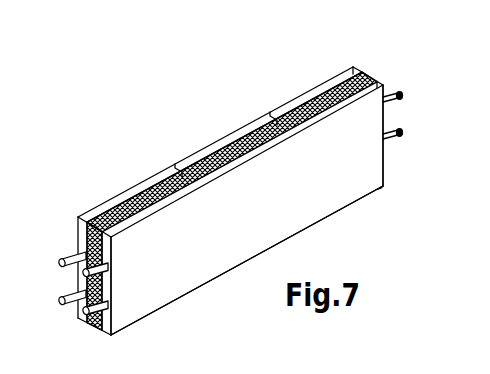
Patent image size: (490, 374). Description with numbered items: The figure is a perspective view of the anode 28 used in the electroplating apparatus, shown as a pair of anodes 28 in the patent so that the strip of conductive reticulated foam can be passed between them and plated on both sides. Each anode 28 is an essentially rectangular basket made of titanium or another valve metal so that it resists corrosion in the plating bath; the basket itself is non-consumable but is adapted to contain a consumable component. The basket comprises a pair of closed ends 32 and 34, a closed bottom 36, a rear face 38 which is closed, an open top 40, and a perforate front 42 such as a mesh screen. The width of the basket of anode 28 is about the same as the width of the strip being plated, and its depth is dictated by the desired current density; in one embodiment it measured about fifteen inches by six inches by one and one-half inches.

The anode 28 is at (328, 186).
The closed end 32 is at (383, 165).
The closed end 34 is at (105, 327).
The closed bottom 36 is at (284, 240).
The rear face 38 is at (198, 262).
The open top 40 is at (383, 82).
The perforate front 42 is at (117, 210).